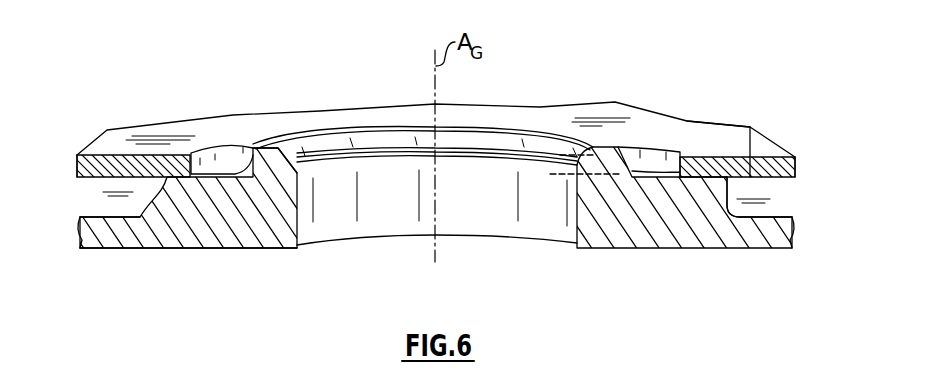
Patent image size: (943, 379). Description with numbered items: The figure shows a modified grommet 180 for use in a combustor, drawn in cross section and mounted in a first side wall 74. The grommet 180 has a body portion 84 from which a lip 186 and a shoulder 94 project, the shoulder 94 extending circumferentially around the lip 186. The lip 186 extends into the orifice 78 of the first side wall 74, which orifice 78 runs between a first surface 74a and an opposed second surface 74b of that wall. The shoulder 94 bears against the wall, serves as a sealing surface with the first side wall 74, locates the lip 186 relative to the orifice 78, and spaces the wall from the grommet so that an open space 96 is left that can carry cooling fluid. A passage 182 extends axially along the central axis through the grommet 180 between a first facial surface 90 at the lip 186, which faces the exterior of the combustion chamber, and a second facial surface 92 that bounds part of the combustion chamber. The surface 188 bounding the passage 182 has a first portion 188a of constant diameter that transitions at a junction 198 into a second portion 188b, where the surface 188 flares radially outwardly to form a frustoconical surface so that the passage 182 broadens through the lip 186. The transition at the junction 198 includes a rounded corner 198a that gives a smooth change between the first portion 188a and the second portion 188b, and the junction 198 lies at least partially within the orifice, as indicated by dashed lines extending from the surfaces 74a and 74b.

The first side wall 74 is at (657, 147).
The first surface 74a is at (718, 145).
The second surface 74b is at (753, 131).
The orifice 78 is at (212, 153).
The body portion 84 is at (594, 237).
The first facial surface 90 is at (273, 143).
The second facial surface 92 is at (252, 250).
The shoulder 94 is at (140, 200).
The open space 96 is at (109, 184).
The grommet 180 is at (204, 300).
The passage 182 is at (382, 220).
The lip 186 is at (612, 146).
The surface 188 is at (336, 163).
The first portion 188a is at (300, 226).
The second portion 188b is at (385, 147).
The junction 198 is at (538, 145).
The rounded corner 198a is at (557, 167).